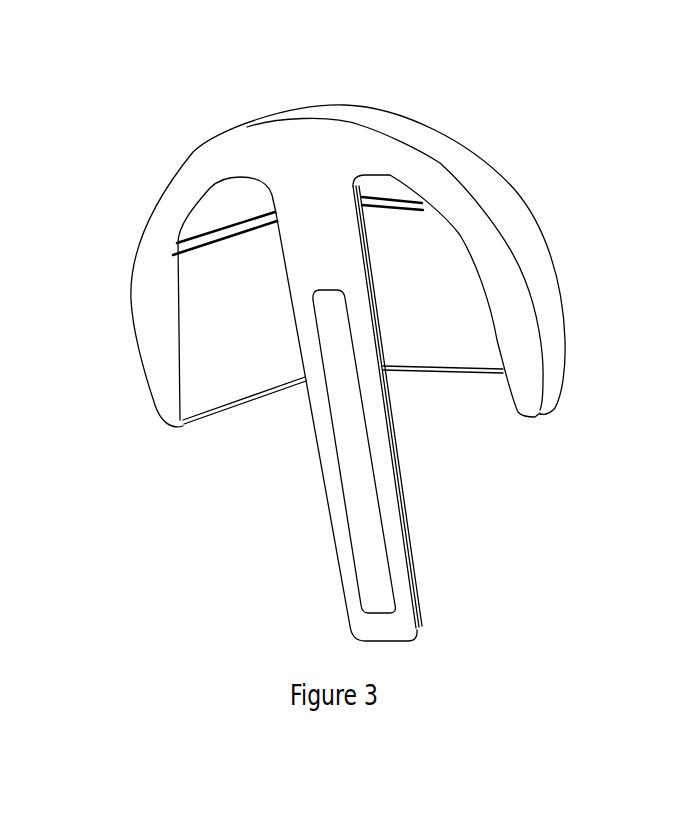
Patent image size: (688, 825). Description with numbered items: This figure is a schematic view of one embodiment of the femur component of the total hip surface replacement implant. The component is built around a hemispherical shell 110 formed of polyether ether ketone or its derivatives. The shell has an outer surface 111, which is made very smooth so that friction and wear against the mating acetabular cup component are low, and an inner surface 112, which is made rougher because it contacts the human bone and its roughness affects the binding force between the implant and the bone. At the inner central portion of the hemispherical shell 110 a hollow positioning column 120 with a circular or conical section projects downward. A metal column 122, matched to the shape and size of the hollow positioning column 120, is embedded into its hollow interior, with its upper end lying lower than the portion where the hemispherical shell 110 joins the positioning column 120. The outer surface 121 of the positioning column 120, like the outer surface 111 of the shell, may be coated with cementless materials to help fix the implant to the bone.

The hemispherical shell 110 is at (412, 232).
The outer surface of hemispherical shell 111 is at (193, 152).
The inner surface of hemispherical shell 112 is at (272, 363).
The positioning column 120 is at (318, 437).
The outer surface of positioning column 121 is at (393, 448).
The metal column 122 is at (357, 518).